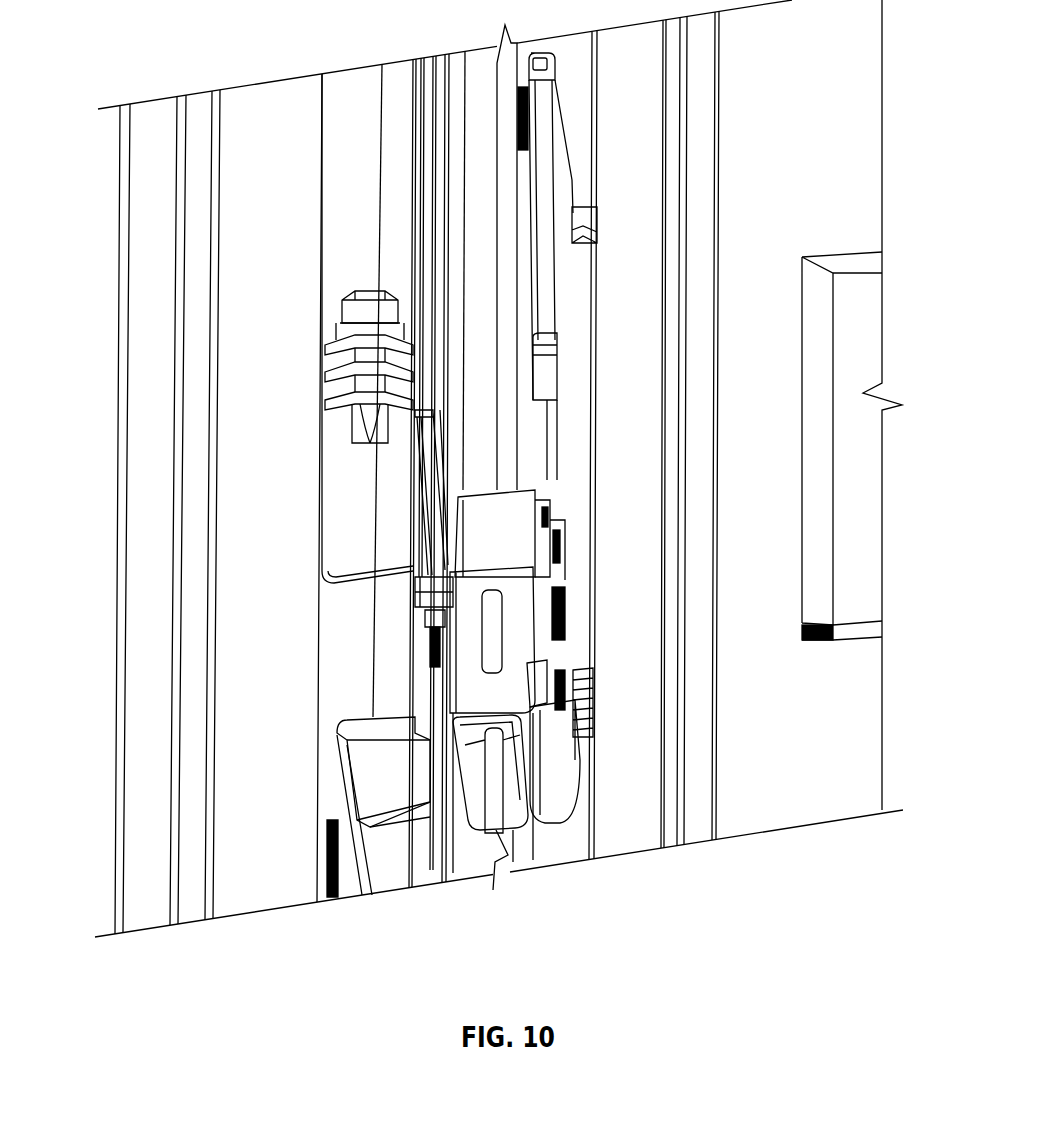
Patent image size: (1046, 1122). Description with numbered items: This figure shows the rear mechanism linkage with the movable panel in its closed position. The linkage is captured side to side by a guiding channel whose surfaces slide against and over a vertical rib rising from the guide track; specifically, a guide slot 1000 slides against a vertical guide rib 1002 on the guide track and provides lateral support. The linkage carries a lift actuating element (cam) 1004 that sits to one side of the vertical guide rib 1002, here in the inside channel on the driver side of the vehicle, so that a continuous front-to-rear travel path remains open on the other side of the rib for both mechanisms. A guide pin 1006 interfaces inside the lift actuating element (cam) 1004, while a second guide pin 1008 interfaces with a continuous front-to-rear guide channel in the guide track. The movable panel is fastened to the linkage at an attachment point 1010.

The guide slot 1000 is at (486, 766).
The vertical guide rib 1002 is at (502, 835).
The lift actuating element (cam) 1004 is at (406, 505).
The guide pin 1006 is at (440, 586).
The guide pin 1008 is at (590, 703).
The attachment point 1010 is at (557, 123).